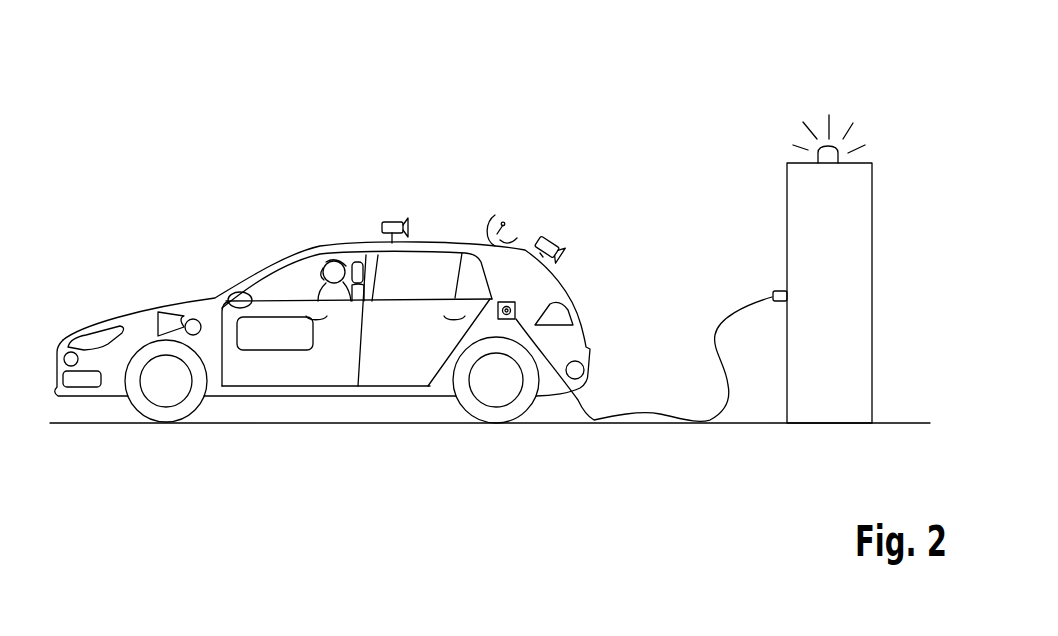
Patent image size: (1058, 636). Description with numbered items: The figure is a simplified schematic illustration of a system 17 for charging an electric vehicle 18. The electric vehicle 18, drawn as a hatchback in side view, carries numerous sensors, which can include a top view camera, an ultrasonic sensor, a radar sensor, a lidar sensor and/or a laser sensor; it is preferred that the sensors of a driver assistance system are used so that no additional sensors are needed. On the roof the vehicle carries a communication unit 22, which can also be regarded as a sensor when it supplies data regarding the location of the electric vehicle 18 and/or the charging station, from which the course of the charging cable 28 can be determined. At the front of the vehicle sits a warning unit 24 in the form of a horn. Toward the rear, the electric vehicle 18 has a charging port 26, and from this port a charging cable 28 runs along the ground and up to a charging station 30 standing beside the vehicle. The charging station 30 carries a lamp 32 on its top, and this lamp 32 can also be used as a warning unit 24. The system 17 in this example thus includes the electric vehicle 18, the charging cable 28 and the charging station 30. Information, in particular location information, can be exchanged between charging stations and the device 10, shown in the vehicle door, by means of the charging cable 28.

The device 10 is at (287, 352).
The system 17 is at (652, 117).
The electric vehicle 18 is at (119, 314).
The communication unit 22 is at (495, 213).
The warning unit 24 is at (193, 318).
The charging port 26 is at (510, 302).
The charging cable 28 is at (665, 417).
The charging station 30 is at (805, 423).
The lamp 32 is at (837, 146).